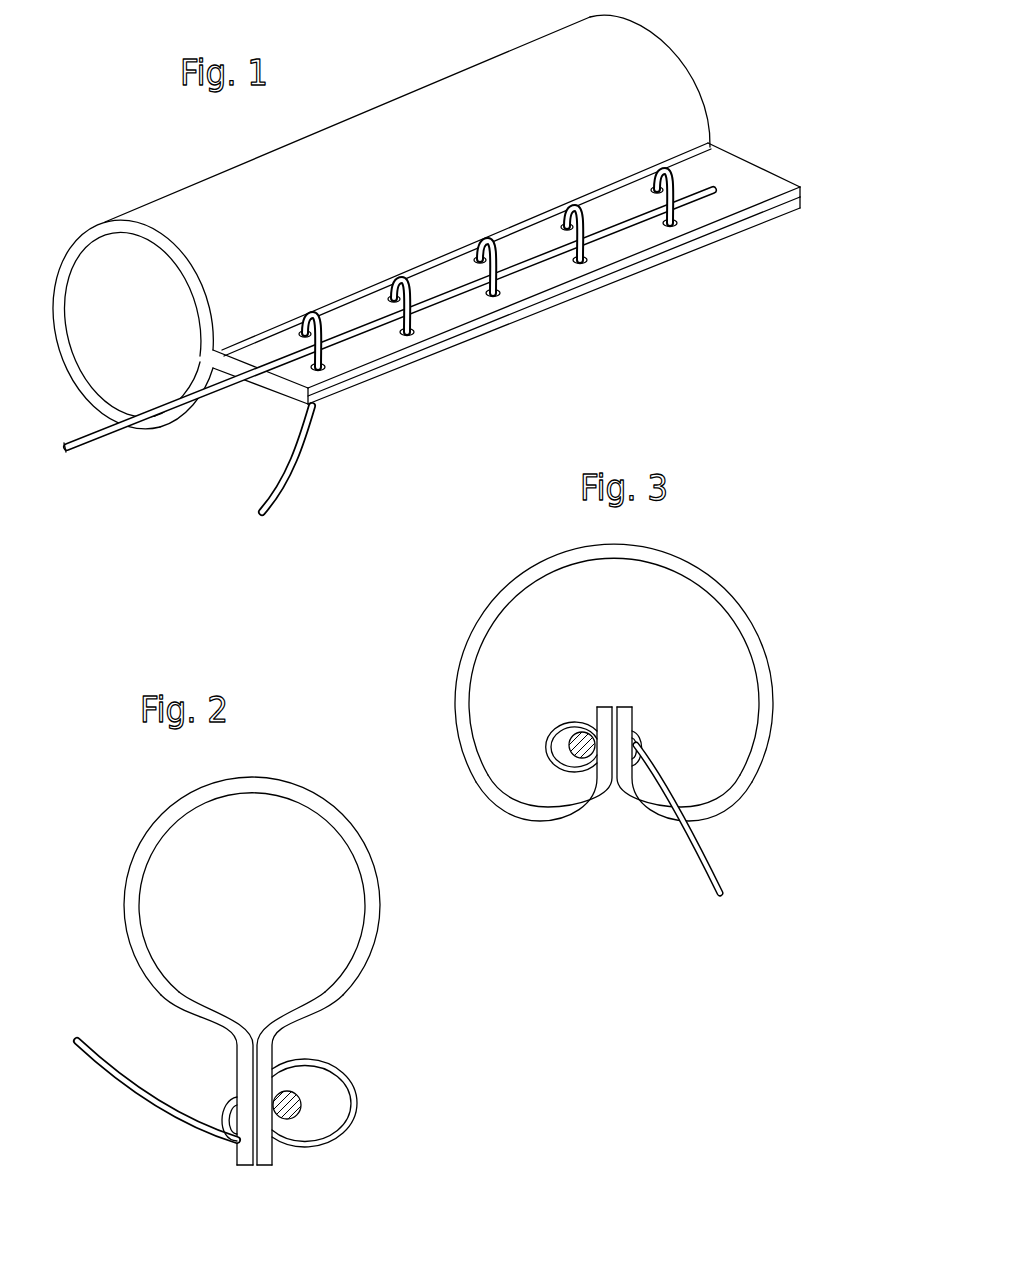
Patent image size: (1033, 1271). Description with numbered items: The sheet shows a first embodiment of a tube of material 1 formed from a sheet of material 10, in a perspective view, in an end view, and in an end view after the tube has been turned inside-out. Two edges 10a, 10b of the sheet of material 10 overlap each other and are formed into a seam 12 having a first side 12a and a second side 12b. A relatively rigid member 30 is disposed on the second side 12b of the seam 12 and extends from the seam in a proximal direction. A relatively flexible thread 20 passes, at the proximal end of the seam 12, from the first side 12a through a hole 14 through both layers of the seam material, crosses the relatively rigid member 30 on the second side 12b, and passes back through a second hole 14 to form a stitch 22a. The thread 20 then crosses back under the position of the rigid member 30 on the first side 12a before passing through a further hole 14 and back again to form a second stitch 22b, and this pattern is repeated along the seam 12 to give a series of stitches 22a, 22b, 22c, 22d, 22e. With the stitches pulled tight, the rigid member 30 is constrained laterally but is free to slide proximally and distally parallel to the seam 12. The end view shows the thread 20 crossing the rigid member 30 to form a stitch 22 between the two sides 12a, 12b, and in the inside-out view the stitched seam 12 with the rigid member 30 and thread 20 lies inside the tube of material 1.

In FIG. 1, the tube of material 1 is at (150, 168).
In FIG. 2, the tube of material 1 is at (317, 770).
In FIG. 3, the tube of material 1 is at (752, 582).
In FIG. 1, the sheet of material 10 is at (668, 58).
In FIG. 2, the sheet of material 10 is at (145, 838).
In FIG. 3, the sheet of material 10 is at (478, 632).
In FIG. 1, the edge of the sheet of material 10a is at (822, 233).
In FIG. 2, the edge of the sheet of material 10a is at (240, 1168).
In FIG. 3, the edge of the sheet of material 10a is at (622, 707).
In FIG. 1, the edge of the sheet of material 10b is at (800, 190).
In FIG. 2, the edge of the sheet of material 10b is at (266, 1168).
In FIG. 3, the edge of the sheet of material 10b is at (606, 707).
In FIG. 1, the seam 12 is at (536, 230).
In FIG. 2, the seam 12 is at (273, 1086).
In FIG. 3, the seam 12 is at (614, 748).
In FIG. 1, the first side of the seam 12a is at (740, 237).
In FIG. 2, the first side of the seam 12a is at (232, 1152).
In FIG. 3, the first side of the seam 12a is at (634, 713).
In FIG. 1, the second side of the seam 12b is at (711, 170).
In FIG. 2, the second side of the seam 12b is at (274, 1157).
In FIG. 3, the second side of the seam 12b is at (597, 713).
In FIG. 1, the hole 14 is at (655, 190).
In FIG. 1, the relatively flexible thread 20 is at (298, 485).
In FIG. 2, the relatively flexible thread 20 is at (100, 1075).
In FIG. 3, the relatively flexible thread 20 is at (718, 863).
In FIG. 2, the stitch 22 is at (357, 1097).
In FIG. 3, the stitch 22 is at (543, 752).
In FIG. 1, the first stitch 22a is at (320, 310).
In FIG. 1, the second stitch 22b is at (408, 275).
In FIG. 1, the stitch 22c is at (498, 240).
In FIG. 1, the stitch 22d is at (585, 205).
In FIG. 1, the stitch 22e is at (672, 172).
In FIG. 1, the relatively rigid member 30 is at (98, 450).
In FIG. 2, the relatively rigid member 30 is at (292, 1100).
In FIG. 3, the relatively rigid member 30 is at (582, 755).